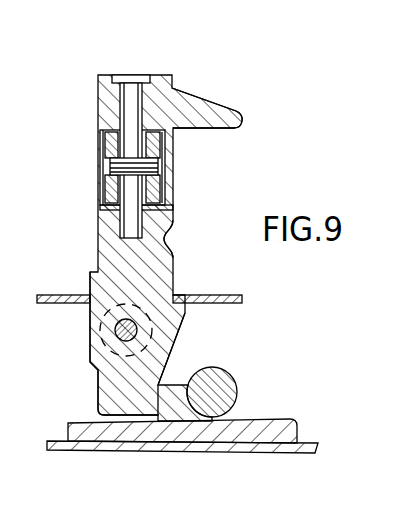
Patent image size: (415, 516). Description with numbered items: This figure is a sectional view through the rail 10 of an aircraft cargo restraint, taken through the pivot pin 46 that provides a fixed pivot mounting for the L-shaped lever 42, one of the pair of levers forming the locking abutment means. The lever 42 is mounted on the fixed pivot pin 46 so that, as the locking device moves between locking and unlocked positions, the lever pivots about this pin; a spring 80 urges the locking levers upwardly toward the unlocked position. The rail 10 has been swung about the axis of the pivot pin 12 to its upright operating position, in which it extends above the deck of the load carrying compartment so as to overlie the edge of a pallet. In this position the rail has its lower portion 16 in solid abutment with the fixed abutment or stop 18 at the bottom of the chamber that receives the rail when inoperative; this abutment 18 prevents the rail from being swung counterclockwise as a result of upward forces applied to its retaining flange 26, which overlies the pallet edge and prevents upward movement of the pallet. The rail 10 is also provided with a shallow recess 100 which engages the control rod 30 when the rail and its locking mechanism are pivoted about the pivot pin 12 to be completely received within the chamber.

The rail 10 is at (100, 87).
The pivot pin 12 is at (115, 328).
The lower portion 16 is at (118, 383).
The fixed abutment 18 is at (199, 440).
The flange 26 is at (217, 113).
The control rod 30 is at (232, 390).
The L-shaped lever 42 is at (98, 143).
The pivot pin 46 is at (131, 96).
The spring 80 is at (108, 163).
The shallow recess 100 is at (165, 237).